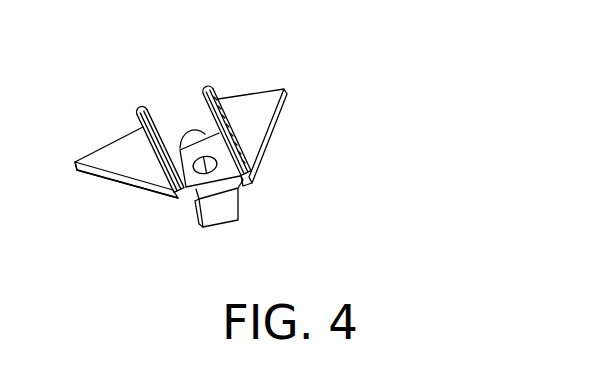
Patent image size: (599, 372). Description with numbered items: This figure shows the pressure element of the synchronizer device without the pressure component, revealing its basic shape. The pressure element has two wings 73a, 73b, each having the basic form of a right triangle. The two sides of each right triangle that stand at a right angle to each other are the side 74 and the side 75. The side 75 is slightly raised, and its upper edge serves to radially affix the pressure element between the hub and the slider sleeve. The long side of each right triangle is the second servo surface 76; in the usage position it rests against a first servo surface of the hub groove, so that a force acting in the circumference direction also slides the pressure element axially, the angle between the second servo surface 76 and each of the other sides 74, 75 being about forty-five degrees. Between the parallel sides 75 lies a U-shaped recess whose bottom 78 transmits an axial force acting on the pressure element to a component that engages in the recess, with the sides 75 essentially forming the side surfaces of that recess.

The wing 73a is at (104, 142).
The wing 73b is at (262, 97).
The side 74 is at (85, 152).
The side 75 is at (146, 112).
The second servo surface 76 is at (134, 188).
The bottom 78 is at (187, 190).